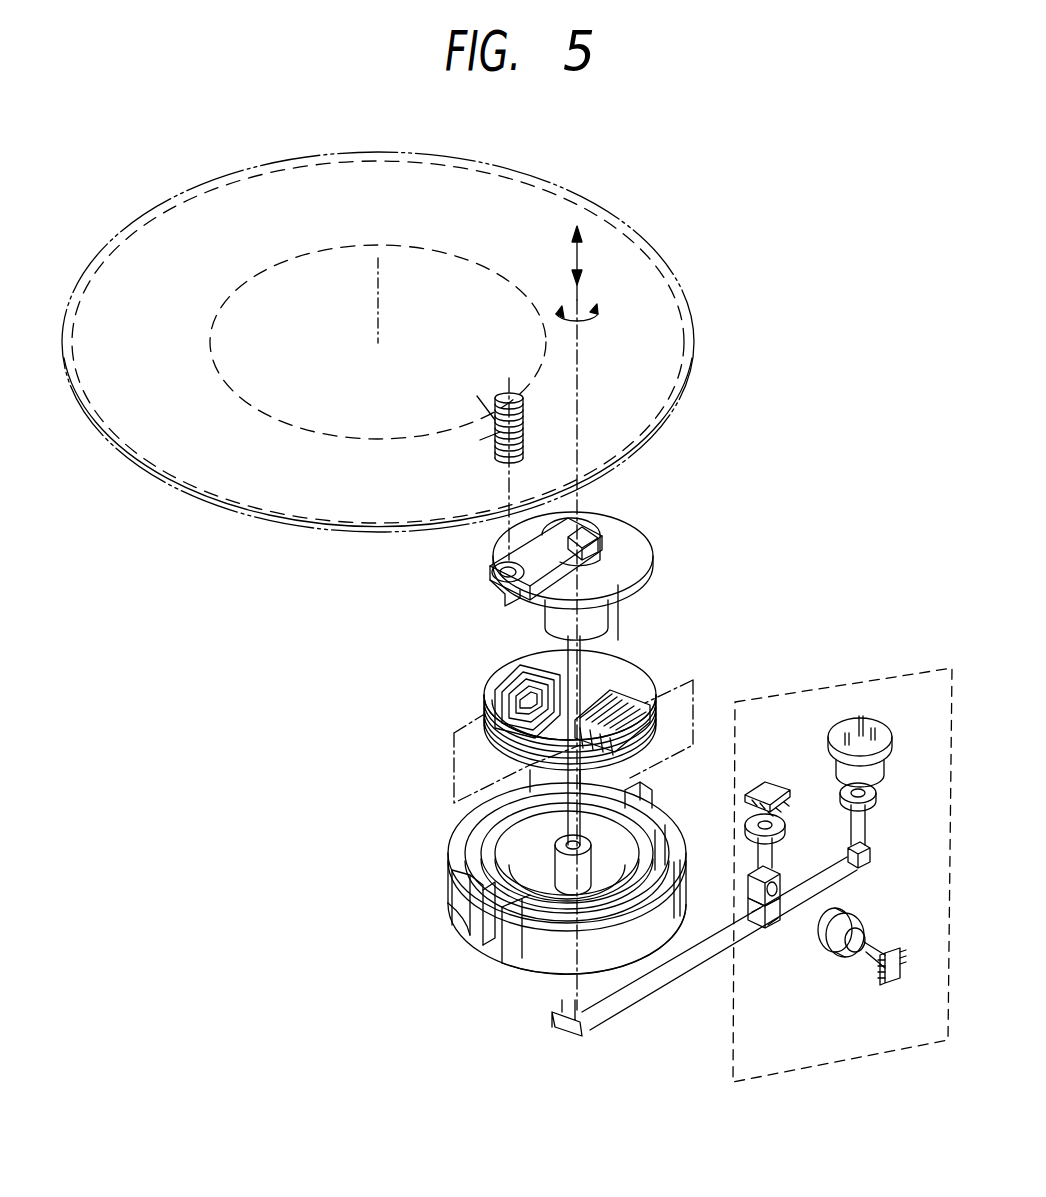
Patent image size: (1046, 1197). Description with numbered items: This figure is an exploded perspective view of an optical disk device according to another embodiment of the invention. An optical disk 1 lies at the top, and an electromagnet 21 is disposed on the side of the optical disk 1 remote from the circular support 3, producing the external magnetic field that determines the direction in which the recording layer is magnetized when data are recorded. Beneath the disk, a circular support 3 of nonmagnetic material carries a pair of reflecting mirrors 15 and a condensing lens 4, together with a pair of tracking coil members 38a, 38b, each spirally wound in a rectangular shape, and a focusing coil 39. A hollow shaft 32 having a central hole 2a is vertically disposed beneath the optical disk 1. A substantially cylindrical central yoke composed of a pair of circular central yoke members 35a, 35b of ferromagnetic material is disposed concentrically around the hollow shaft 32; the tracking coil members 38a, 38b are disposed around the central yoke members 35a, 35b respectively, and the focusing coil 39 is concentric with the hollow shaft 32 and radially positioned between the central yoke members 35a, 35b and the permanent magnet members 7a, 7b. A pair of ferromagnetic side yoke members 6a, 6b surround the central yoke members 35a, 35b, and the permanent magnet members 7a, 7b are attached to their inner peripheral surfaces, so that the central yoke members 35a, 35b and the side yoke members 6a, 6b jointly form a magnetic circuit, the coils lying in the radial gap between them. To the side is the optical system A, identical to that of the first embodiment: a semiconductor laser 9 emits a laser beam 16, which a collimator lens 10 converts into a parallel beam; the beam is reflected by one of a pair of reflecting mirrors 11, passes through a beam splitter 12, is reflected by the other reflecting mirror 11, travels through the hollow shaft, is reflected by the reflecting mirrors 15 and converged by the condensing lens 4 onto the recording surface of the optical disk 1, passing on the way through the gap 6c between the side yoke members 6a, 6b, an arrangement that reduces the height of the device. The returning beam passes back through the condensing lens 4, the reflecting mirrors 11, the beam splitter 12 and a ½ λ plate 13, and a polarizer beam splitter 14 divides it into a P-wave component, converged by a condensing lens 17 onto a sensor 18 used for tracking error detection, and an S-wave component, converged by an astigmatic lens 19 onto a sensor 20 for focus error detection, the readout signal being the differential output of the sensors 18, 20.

The optical disk 1 is at (270, 512).
The electromagnet 21 is at (503, 396).
The circular support 3 is at (632, 540).
The reflecting mirrors 15 is at (600, 516).
The condensing lens 4 is at (490, 568).
The focusing coil 39 is at (644, 644).
The tracking coil member 38a is at (492, 674).
The tracking coil member 38b is at (652, 682).
The central hole 2a is at (553, 847).
The hollow shaft 32 is at (568, 880).
The side yoke member 6a is at (440, 856).
The permanent magnet member 7a is at (462, 892).
The side yoke member 6b is at (515, 950).
The gap 6c is at (658, 825).
The central yoke member 35a is at (476, 804).
The central yoke member 35b is at (640, 806).
The permanent magnet member 7b is at (629, 934).
The beam splitter 12 is at (584, 1036).
The laser beam 16 is at (837, 883).
The optical system A is at (876, 678).
The semiconductor laser 9 is at (884, 736).
The collimator lens 10 is at (878, 800).
The reflecting mirrors 11 is at (875, 856).
The sensor 18 is at (780, 784).
The condensing lens 17 is at (786, 827).
The polarizer beam splitter 14 is at (748, 880).
The ½ λ plate 13 is at (748, 908).
The astigmatic lens 19 is at (835, 958).
The sensor 20 is at (893, 984).